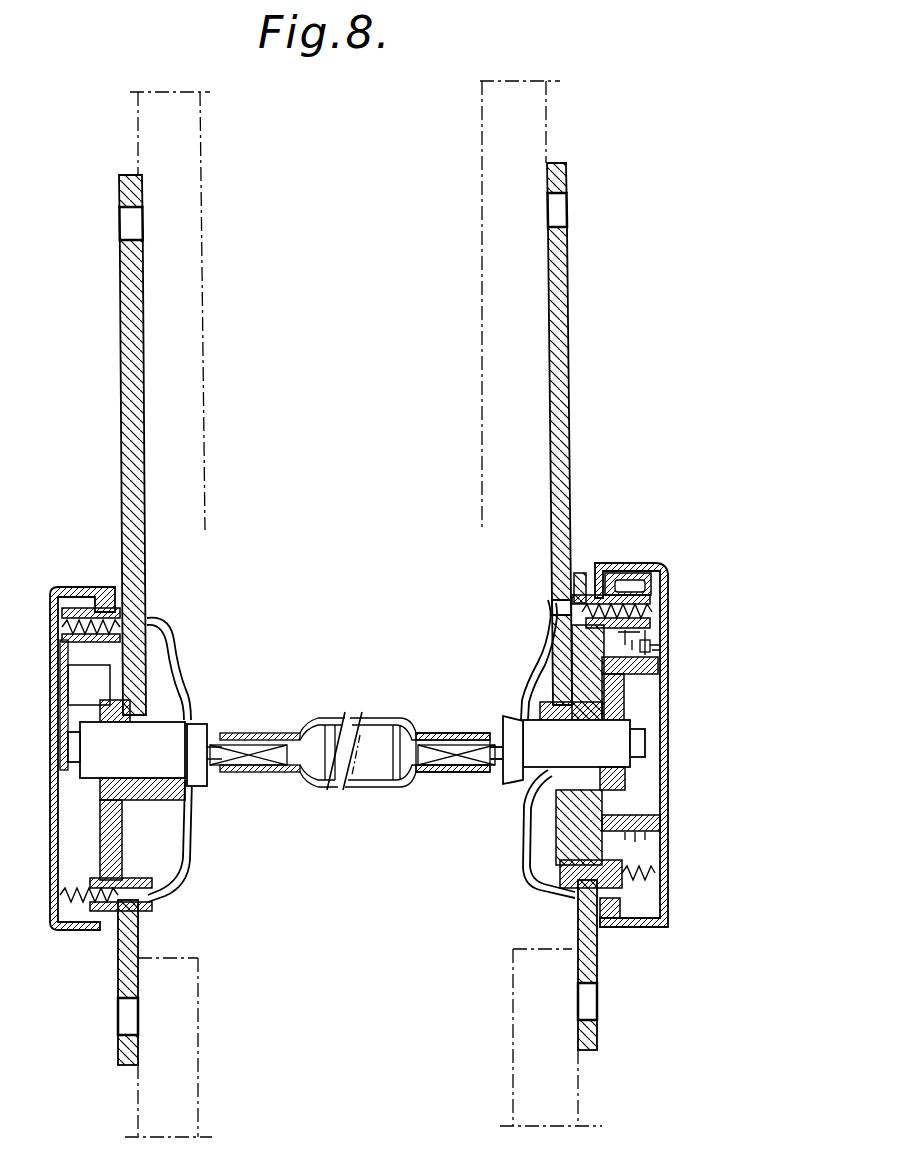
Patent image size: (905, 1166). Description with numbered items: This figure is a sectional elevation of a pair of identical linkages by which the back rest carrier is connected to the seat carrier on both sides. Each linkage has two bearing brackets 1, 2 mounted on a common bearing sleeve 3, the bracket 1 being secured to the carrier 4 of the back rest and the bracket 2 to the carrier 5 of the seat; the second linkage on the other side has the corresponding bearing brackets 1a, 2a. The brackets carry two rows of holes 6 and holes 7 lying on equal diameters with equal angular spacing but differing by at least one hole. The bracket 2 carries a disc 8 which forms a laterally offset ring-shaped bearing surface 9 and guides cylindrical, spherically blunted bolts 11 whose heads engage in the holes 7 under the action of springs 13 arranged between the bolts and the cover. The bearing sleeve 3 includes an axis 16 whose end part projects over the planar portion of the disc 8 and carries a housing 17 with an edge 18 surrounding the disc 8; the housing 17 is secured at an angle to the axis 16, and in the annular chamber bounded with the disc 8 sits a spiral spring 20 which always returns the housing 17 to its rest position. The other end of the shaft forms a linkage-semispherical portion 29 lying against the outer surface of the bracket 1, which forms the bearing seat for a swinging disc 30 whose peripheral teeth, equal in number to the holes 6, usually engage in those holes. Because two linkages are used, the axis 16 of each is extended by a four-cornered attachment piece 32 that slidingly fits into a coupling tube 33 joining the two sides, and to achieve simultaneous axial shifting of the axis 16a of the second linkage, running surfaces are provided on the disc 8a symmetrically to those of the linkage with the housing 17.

The bearing bracket 1 is at (557, 303).
The bearing bracket 1a is at (129, 356).
The bearing bracket 2 is at (592, 1040).
The bearing bracket 2a is at (128, 1041).
The bearing sleeve 3 is at (526, 716).
The carrier 4 is at (206, 385).
The carrier 5 is at (200, 1022).
The holes 6 is at (548, 606).
The holes 7 is at (578, 600).
The disc 8 is at (622, 860).
The disc 8a is at (100, 857).
The bearing surface 9 is at (617, 922).
The bolts 11 is at (646, 621).
The springs 13 is at (640, 598).
The axis 16 is at (612, 743).
The axis 16a is at (92, 763).
The housing 17 is at (660, 651).
The edge 18 is at (616, 572).
The spiral spring 20 is at (655, 833).
The linkage-semispherical portion 29 is at (503, 771).
The swinging disc 30 is at (527, 852).
The four-cornered attachment piece 32 is at (432, 746).
The coupling tube 33 is at (352, 792).